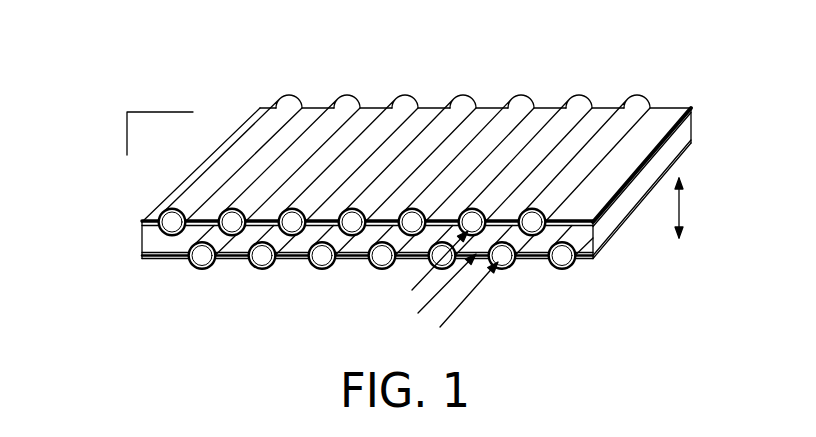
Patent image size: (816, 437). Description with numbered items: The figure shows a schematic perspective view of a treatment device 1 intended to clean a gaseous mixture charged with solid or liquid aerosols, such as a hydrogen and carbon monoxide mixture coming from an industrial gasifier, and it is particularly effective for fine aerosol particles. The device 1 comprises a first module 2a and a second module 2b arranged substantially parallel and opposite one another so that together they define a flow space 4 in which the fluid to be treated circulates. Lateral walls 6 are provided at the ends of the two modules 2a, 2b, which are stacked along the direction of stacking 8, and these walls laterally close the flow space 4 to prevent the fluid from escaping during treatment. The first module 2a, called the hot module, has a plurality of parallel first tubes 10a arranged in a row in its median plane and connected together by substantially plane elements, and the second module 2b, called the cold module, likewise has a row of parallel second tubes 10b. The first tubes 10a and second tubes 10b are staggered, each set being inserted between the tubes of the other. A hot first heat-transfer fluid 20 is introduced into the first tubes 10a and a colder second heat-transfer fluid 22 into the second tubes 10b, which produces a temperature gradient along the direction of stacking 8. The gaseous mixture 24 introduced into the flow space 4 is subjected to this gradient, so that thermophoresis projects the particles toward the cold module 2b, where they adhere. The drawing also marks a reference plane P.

The treatment device 1 is at (343, 87).
The first module 2a is at (140, 220).
The second module 2b is at (140, 257).
The flow space 4 is at (175, 244).
The lateral walls 6 is at (140, 238).
The direction of stacking 8 is at (682, 208).
The first tubes 10a is at (522, 100).
The second tubes 10b is at (318, 287).
The first hot heat-transfer fluid 20 is at (414, 284).
The second heat-transfer fluid 22 is at (468, 292).
The gaseous mixture 24 is at (428, 303).
The reference plane / point P is at (127, 112).